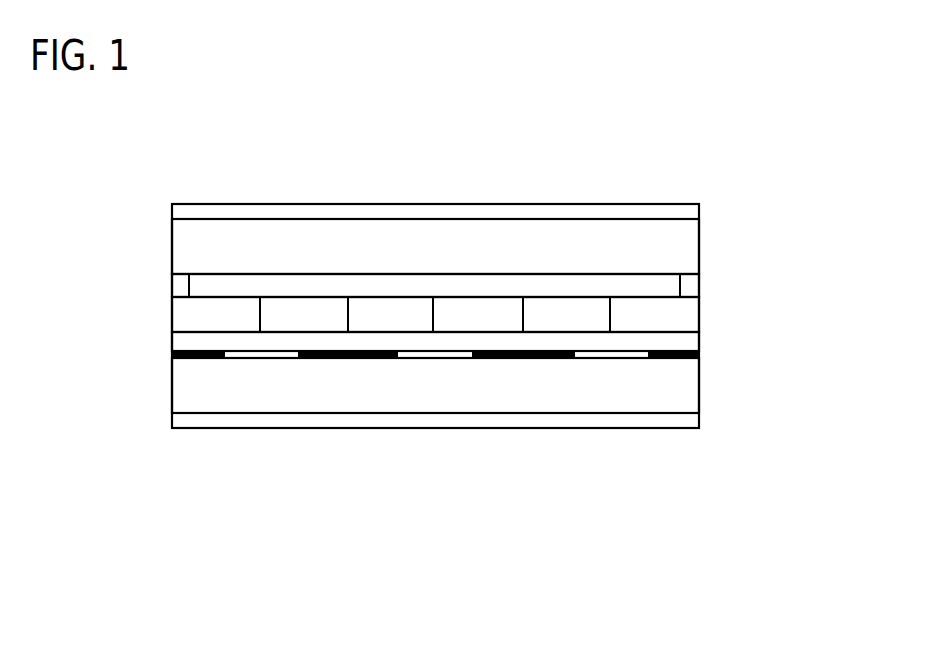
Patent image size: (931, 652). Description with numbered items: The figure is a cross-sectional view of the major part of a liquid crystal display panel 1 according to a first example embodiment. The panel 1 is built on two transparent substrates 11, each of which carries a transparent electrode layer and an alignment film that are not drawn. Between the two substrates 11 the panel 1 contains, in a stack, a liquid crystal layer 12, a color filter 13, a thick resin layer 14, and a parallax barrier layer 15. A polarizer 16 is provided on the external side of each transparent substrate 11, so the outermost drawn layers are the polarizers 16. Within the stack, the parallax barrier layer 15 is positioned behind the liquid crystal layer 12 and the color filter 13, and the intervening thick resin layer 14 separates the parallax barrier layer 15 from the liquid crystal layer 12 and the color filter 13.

The liquid crystal display panel 1 is at (778, 263).
The transparent substrate 11 is at (500, 228).
The liquid crystal layer 12 is at (668, 283).
The color filter 13 is at (690, 316).
The thick resin layer 14 is at (690, 339).
The parallax barrier layer 15 is at (690, 361).
The polarizer 16 is at (398, 212).